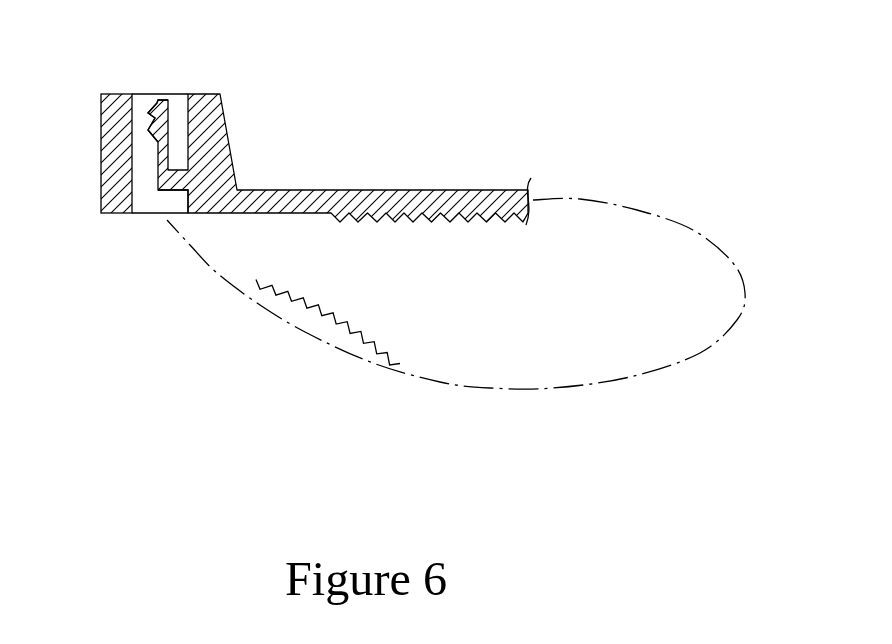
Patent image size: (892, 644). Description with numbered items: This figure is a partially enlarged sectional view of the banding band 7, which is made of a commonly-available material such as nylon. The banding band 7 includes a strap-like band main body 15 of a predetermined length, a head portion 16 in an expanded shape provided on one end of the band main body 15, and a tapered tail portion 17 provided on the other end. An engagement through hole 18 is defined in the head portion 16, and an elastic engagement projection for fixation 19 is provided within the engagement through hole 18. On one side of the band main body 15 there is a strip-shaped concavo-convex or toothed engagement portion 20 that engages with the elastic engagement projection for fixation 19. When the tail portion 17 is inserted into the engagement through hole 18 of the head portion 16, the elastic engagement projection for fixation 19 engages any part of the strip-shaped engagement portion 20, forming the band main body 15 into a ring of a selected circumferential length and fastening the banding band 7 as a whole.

The banding band 7 is at (466, 179).
The band main body 15 is at (393, 190).
The head portion 16 is at (101, 137).
The tail portion 17 is at (143, 190).
The engagement through hole 18 is at (141, 198).
The elastic engagement projection for fixation 19 is at (158, 99).
The strip-shaped engagement portion 20 is at (380, 221).